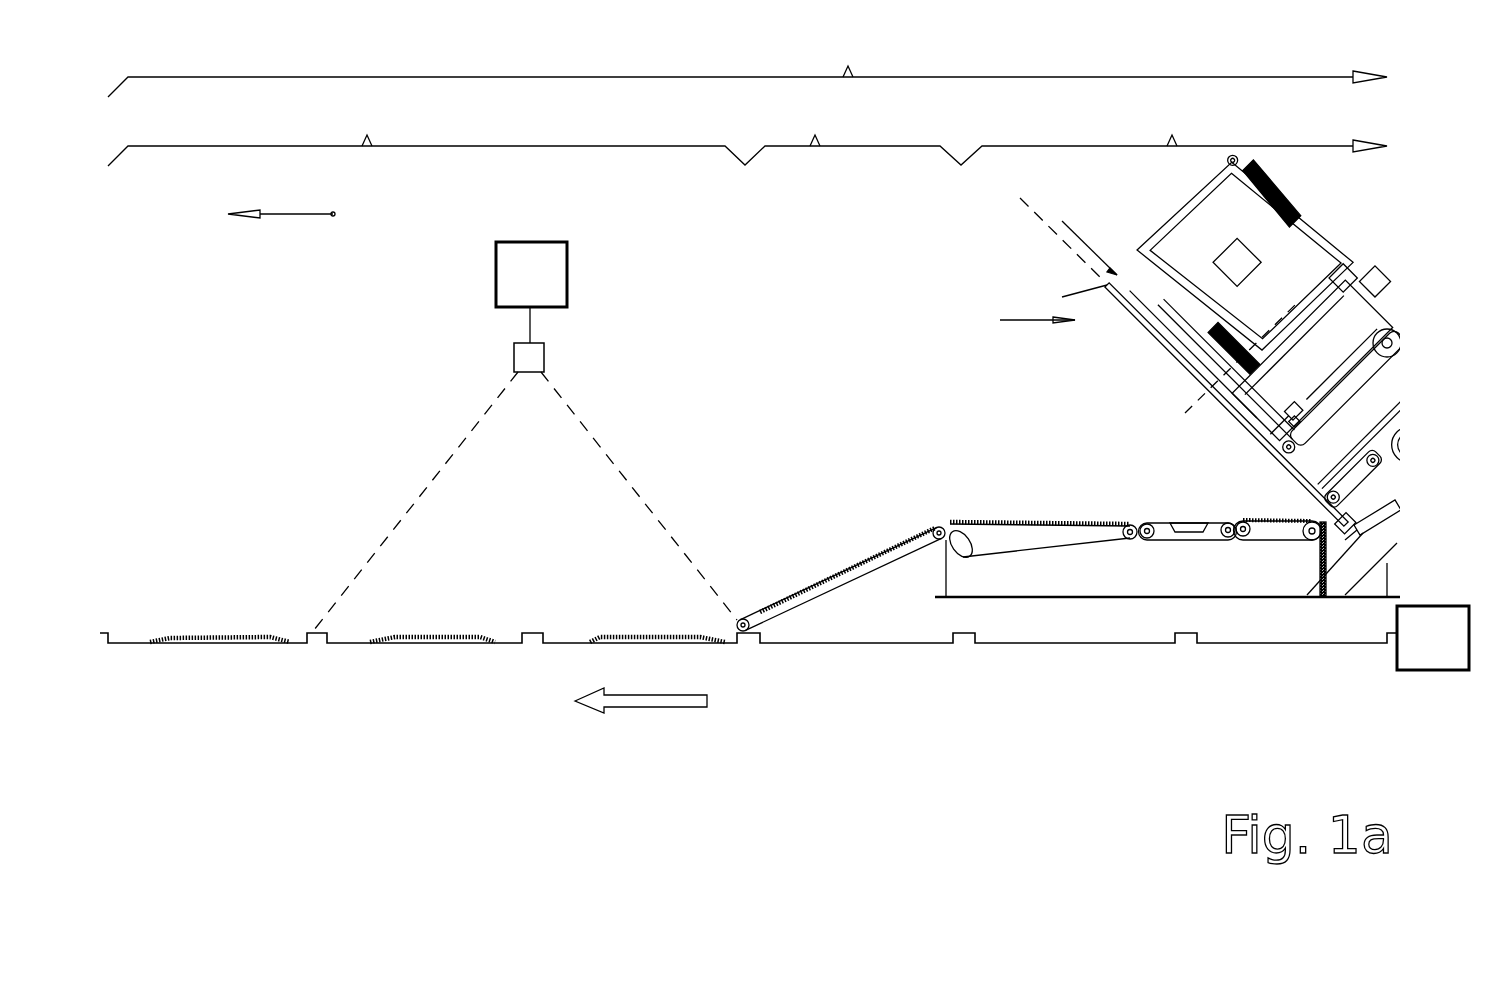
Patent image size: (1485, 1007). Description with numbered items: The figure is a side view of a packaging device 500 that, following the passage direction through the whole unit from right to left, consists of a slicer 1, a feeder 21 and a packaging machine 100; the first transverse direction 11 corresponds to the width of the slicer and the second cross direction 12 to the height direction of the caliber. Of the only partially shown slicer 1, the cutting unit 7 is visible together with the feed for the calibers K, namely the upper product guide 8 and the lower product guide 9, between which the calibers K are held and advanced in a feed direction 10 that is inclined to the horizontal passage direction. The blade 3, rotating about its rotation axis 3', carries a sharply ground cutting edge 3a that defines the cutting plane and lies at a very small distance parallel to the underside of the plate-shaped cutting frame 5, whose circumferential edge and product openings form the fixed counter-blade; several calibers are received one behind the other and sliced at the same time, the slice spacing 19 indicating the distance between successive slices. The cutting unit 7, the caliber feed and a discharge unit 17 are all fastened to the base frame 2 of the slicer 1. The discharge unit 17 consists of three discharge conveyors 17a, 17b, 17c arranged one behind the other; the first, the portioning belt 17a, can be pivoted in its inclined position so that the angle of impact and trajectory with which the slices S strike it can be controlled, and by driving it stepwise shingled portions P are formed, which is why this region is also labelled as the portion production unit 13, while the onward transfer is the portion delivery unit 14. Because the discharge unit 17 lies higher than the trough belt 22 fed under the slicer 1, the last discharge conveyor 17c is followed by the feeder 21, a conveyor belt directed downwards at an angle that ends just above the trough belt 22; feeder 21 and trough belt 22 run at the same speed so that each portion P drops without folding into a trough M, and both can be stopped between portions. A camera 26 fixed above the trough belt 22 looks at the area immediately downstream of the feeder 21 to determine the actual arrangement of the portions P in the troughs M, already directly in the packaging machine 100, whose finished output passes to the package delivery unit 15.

The packaging device 500 is at (747, 67).
The packaging machine 100 is at (747, 137).
The feeder 21 is at (841, 369).
The slicer 1 is at (1291, 352).
The first transverse direction 11 is at (336, 214).
The camera 26 is at (525, 486).
The second cross direction 12 is at (1033, 212).
The cutting unit 7 is at (1086, 236).
The cutting edge 3a is at (1071, 296).
The blade 3 is at (1028, 323).
The slice spacing 19 is at (1374, 281).
The rotation axis 3' is at (1240, 350).
The upper product guide 8 is at (1340, 390).
The caliber K is at (1361, 445).
The feed direction 10 is at (1286, 422).
The lower product guide 9 is at (1353, 478).
The cutting frame 5 is at (1226, 404).
The base frame 2 is at (1354, 548).
The trough belt 22 is at (1285, 655).
The trough M is at (330, 633).
The portion P is at (610, 640).
The package delivery unit 15 is at (1433, 638).
The portion delivery unit 14 is at (845, 510).
The portion production unit 13 is at (1167, 505).
The discharge unit 17 is at (1167, 505).
The portioning belt 17a is at (1267, 540).
The discharge conveyor 17b is at (1163, 537).
The discharge conveyor 17c is at (1043, 548).
The slice S is at (1263, 520).